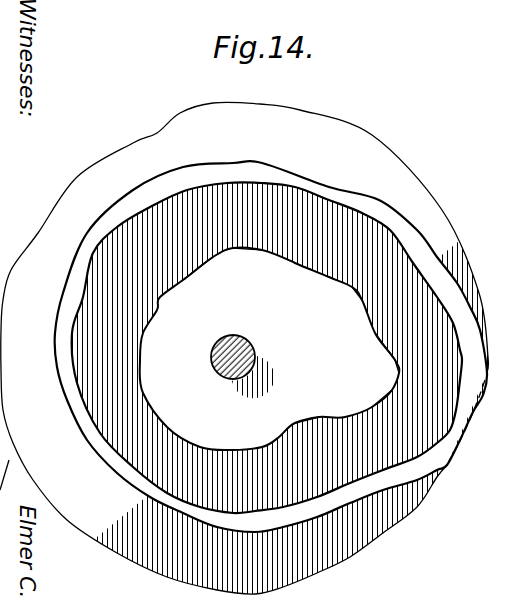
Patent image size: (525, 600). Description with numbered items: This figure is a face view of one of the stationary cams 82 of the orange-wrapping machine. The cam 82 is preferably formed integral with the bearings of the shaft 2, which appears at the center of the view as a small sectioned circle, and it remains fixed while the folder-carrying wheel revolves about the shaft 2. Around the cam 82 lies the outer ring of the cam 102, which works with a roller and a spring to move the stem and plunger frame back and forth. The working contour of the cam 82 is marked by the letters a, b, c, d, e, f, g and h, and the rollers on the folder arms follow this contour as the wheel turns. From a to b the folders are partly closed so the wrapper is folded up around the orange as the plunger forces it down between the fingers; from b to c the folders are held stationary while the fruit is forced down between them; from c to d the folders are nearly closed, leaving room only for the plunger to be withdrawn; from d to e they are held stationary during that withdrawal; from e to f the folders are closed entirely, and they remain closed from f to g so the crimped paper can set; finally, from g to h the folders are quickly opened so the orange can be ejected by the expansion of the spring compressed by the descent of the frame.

The cam 102 is at (377, 171).
The cam 82 is at (267, 347).
The shaft 2 is at (215, 371).
The cam profile point a is at (200, 270).
The cam profile point b is at (246, 257).
The cam profile point c is at (309, 274).
The cam profile point d is at (349, 293).
The cam profile point e is at (376, 338).
The cam profile point f is at (385, 362).
The cam profile point g is at (382, 397).
The cam profile point h is at (307, 414).